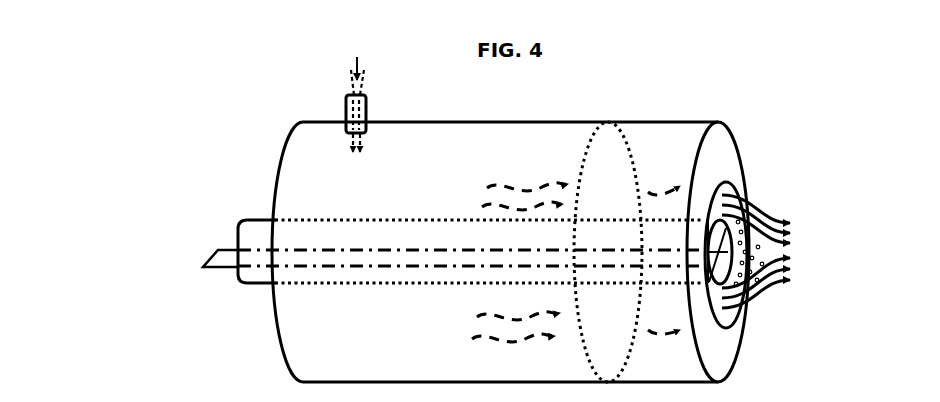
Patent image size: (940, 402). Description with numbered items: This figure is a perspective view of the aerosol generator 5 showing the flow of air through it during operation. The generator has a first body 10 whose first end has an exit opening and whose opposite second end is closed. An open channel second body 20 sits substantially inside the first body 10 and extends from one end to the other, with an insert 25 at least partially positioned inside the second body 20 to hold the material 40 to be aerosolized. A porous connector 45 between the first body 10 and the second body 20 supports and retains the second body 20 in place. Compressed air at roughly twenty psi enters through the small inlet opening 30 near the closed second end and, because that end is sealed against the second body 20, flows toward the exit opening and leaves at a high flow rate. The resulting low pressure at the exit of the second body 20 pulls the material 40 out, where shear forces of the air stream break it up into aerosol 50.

The aerosol generator 5 is at (203, 166).
The first body 10 is at (663, 122).
The second body 20 is at (252, 241).
The insert 25 is at (217, 265).
The inlet opening 30 is at (360, 106).
The material 40 is at (705, 196).
The porous connector 45 is at (592, 142).
The aerosol 50 is at (766, 252).